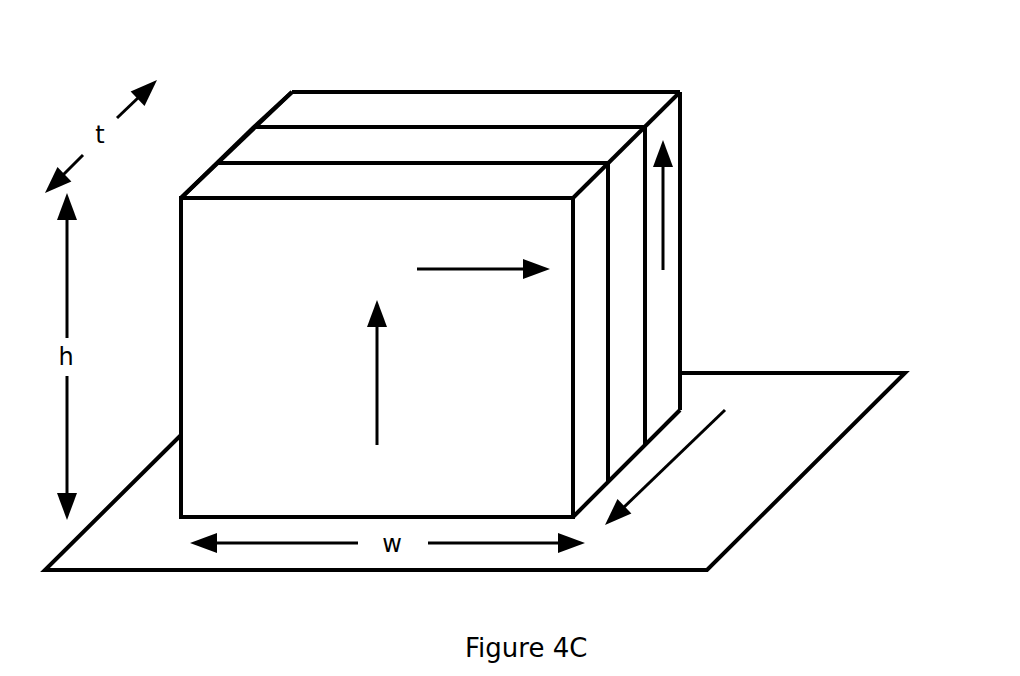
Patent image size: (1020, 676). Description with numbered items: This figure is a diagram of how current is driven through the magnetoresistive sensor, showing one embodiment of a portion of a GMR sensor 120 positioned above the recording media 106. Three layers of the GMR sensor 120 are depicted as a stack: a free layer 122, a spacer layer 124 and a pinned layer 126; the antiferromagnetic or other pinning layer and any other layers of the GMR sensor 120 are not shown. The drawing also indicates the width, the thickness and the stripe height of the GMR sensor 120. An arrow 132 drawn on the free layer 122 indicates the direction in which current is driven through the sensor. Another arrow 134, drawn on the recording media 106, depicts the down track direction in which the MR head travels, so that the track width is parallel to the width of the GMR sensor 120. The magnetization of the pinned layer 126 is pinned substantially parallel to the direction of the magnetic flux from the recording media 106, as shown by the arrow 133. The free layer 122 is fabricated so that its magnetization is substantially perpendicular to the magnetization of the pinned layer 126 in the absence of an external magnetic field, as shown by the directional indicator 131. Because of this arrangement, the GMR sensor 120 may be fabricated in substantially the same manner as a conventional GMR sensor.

The recording media 106 is at (240, 570).
The GMR sensor 120 is at (445, 37).
The free layer 122 is at (200, 180).
The spacer layer 124 is at (240, 136).
The pinned layer 126 is at (618, 92).
The directional indicator 131 is at (488, 270).
The arrow 132 is at (377, 392).
The arrow 133 is at (668, 215).
The arrow 134 is at (653, 483).